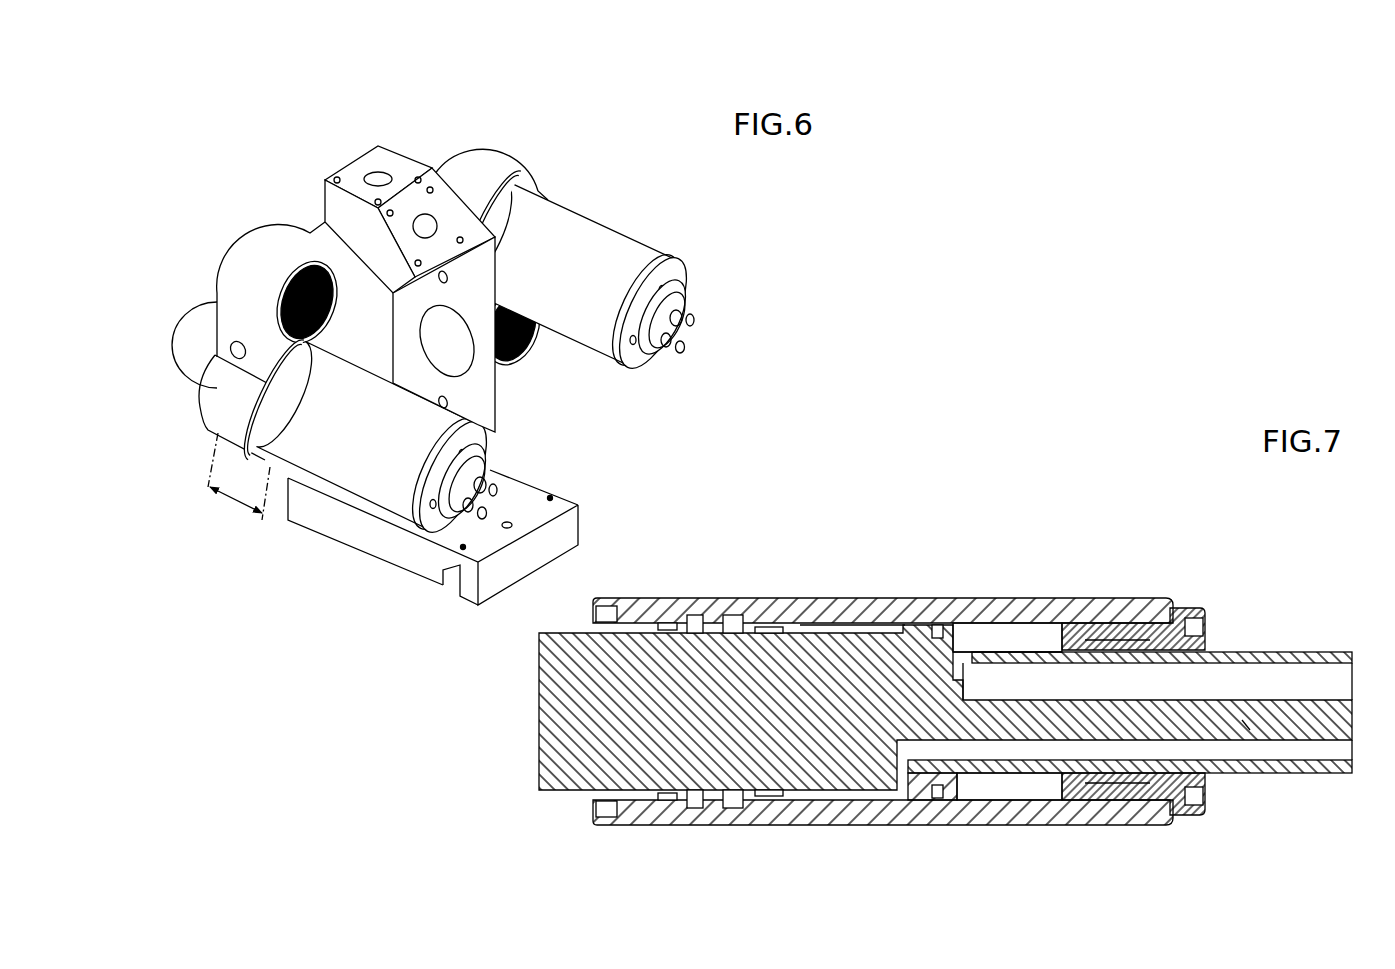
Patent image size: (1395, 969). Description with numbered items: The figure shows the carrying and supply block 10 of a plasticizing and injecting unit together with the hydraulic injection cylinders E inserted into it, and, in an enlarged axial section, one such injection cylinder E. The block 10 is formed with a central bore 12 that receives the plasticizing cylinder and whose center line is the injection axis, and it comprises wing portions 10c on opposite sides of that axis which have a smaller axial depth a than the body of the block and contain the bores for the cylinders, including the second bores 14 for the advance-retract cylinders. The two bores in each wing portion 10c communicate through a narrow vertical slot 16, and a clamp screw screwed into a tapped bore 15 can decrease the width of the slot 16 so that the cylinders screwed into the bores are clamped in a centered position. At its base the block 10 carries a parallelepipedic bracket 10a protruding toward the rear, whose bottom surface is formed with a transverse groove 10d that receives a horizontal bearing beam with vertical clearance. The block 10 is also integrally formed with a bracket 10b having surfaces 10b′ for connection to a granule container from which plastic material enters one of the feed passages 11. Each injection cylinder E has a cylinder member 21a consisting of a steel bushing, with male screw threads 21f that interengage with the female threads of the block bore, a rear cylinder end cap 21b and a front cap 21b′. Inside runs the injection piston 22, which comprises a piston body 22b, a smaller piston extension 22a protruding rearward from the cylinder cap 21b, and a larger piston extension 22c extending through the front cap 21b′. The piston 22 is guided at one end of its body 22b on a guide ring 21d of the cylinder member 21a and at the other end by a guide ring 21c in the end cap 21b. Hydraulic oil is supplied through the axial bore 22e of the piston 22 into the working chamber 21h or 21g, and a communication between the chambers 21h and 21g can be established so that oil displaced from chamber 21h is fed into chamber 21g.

In FIG. 6, the carrying and supply block 10 is at (403, 252).
In FIG. 6, the parallelepipedic bracket 10a is at (468, 545).
In FIG. 6, the bracket 10b is at (340, 223).
In FIG. 6, the connection surfaces 10b′ is at (374, 168).
In FIG. 6, the wing portion 10c is at (483, 152).
In FIG. 6, the transverse groove 10d is at (460, 588).
In FIG. 6, the feed passage 11 is at (425, 218).
In FIG. 6, the bore 12 is at (450, 343).
In FIG. 6, the second bore 14 is at (303, 273).
In FIG. 6, the tapped bore 15 is at (237, 345).
In FIG. 6, the narrow vertical slot 16 is at (220, 380).
In FIG. 6, the cylinder member 21a is at (510, 390).
In FIG. 7, the cylinder member 21a is at (899, 658).
In FIG. 6, the cylinder end cap 21b is at (653, 283).
In FIG. 7, the cylinder end cap 21b is at (1133, 658).
In FIG. 7, the front cap 21b′ is at (635, 627).
In FIG. 7, the guide ring 21c is at (1102, 638).
In FIG. 7, the guide ring 21d is at (772, 627).
In FIG. 6, the male screw threads 21f is at (520, 182).
In FIG. 7, the male screw threads 21f is at (690, 623).
In FIG. 7, the working chamber 21g is at (1010, 637).
In FIG. 7, the working chamber 21h is at (845, 627).
In FIG. 7, the injection piston 22 is at (1138, 700).
In FIG. 6, the piston extension 22a is at (557, 431).
In FIG. 7, the piston extension 22a is at (1242, 720).
In FIG. 7, the piston body 22b is at (923, 627).
In FIG. 6, the piston extension 22c is at (185, 370).
In FIG. 7, the piston extension 22c is at (573, 707).
In FIG. 6, the axial bore 22e is at (700, 320).
In FIG. 7, the axial bore 22e is at (1302, 750).
In FIG. 6, the injection cylinder E is at (600, 220).
In FIG. 7, the injection cylinder E is at (814, 596).
In FIG. 6, the axial depth a is at (234, 483).